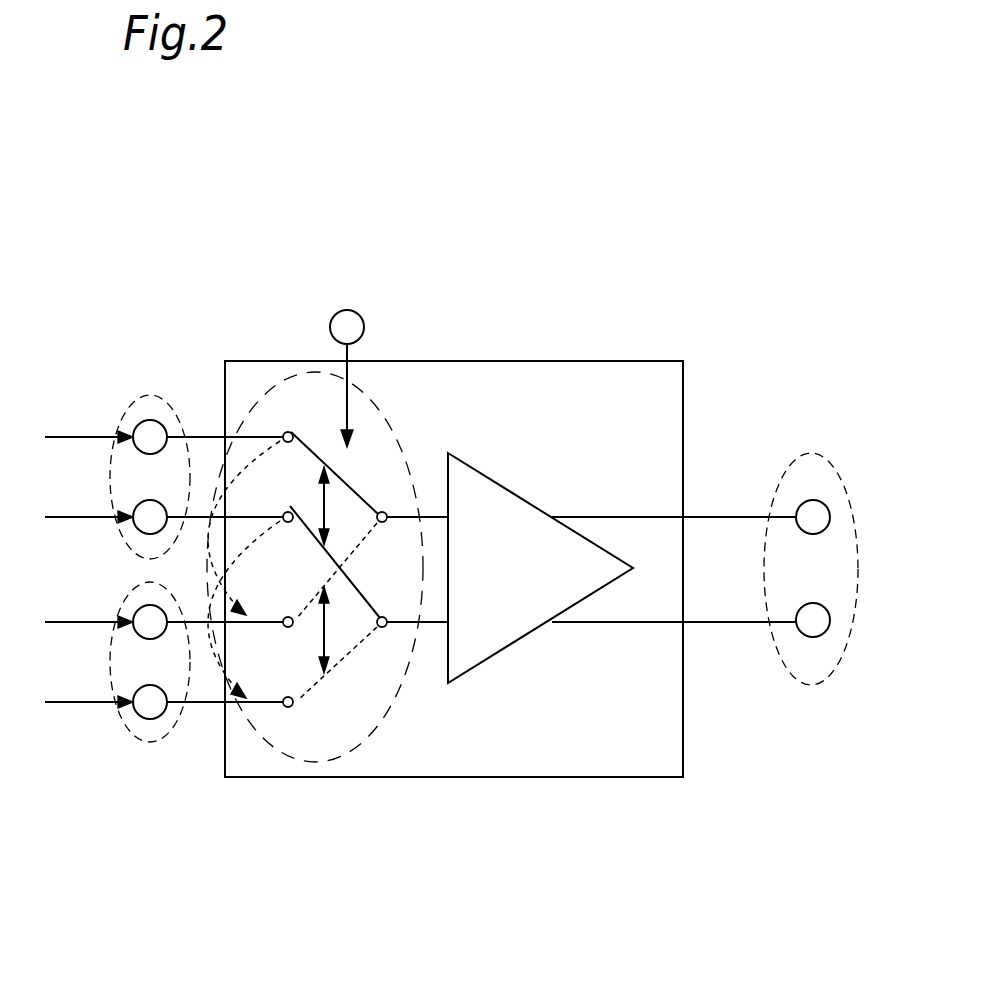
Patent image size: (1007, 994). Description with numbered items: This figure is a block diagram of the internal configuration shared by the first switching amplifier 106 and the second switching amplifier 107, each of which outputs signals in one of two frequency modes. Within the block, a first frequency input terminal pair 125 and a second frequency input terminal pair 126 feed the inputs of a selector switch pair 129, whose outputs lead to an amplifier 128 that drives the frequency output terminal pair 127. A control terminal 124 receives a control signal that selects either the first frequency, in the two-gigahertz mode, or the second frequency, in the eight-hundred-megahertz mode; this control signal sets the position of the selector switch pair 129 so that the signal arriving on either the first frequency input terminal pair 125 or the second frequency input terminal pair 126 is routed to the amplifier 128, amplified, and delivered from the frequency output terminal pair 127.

The first switching amplifier 106 is at (454, 430).
The second switching amplifier 107 is at (655, 112).
The control terminal 124 is at (347, 310).
The first frequency input terminal pair 125 is at (150, 393).
The second frequency input terminal pair 126 is at (145, 745).
The frequency output terminal pair 127 is at (812, 452).
The amplifier 128 is at (507, 650).
The selector switch pair 129 is at (390, 710).